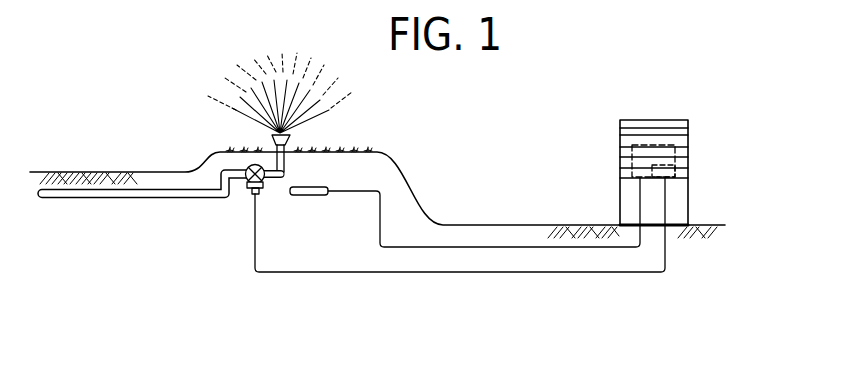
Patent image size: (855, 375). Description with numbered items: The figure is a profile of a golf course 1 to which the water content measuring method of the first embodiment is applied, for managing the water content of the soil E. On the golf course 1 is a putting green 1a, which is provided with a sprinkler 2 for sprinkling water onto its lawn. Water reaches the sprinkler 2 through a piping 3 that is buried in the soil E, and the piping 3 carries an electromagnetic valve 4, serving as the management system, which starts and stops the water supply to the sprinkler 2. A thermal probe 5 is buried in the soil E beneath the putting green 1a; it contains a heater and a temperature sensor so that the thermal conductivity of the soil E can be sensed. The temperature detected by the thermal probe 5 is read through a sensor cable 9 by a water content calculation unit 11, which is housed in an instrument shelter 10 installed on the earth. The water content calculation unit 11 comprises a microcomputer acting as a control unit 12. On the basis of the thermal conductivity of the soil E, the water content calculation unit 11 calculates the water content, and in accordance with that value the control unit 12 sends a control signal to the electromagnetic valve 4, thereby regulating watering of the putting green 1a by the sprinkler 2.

The golf course 1 is at (160, 153).
The putting green 1a is at (229, 142).
The sprinkler 2 is at (292, 136).
The piping 3 is at (118, 199).
The electromagnetic valve 4 is at (264, 187).
The thermal probe 5 is at (320, 196).
The sensor cable 9 is at (481, 247).
The instrument shelter 10 is at (620, 153).
The water content calculation unit 11 is at (657, 145).
The control unit 12 is at (676, 172).
The soil E is at (205, 211).